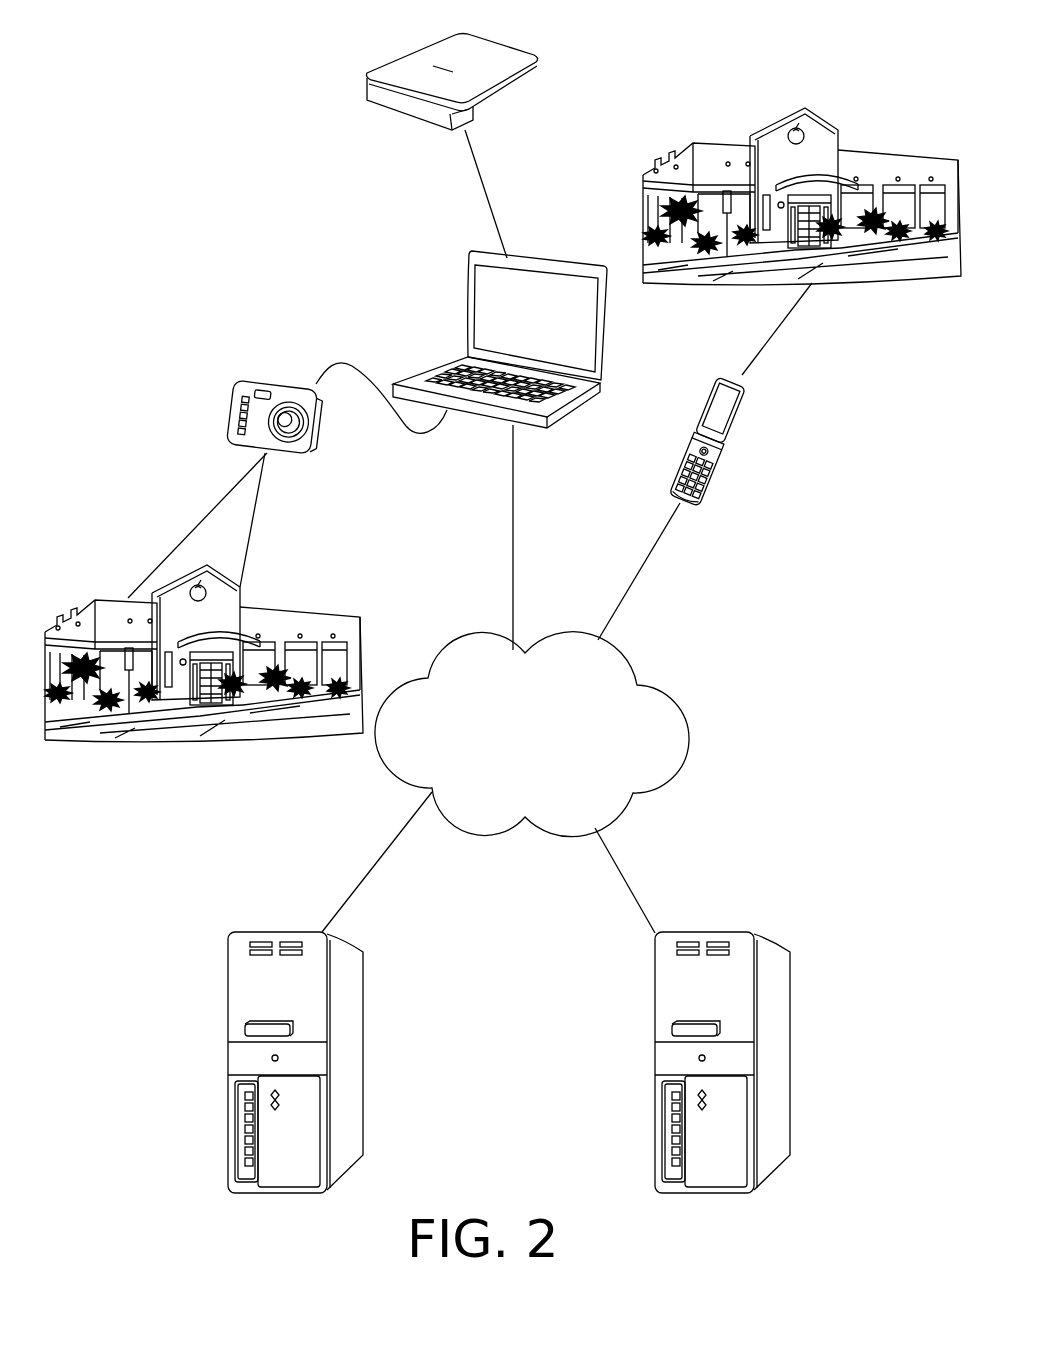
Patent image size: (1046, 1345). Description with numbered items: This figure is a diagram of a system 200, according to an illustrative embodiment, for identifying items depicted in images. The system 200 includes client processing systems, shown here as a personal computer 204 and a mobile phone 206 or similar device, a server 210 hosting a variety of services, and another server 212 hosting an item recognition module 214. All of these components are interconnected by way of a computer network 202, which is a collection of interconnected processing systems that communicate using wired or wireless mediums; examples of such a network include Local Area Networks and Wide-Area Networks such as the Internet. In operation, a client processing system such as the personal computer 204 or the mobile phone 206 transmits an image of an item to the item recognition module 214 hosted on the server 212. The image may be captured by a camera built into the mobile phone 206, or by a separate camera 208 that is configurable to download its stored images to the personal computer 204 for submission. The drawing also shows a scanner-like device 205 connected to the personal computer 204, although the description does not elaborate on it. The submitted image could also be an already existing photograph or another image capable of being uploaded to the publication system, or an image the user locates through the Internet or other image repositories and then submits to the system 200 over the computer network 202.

The system 200 is at (229, 70).
The computer network 202 is at (670, 686).
The personal computer 204 is at (528, 260).
The scanner 205 is at (513, 87).
The mobile phone 206 is at (718, 482).
The camera 208 is at (262, 380).
The server 210 is at (260, 932).
The server 212 is at (756, 1040).
The item recognition module 214 is at (733, 1063).